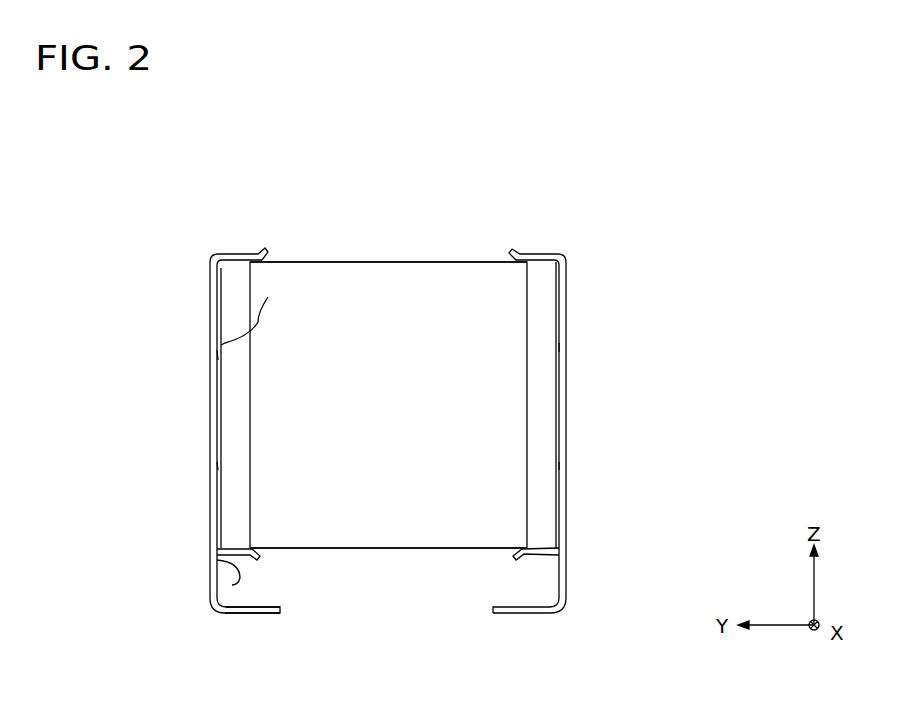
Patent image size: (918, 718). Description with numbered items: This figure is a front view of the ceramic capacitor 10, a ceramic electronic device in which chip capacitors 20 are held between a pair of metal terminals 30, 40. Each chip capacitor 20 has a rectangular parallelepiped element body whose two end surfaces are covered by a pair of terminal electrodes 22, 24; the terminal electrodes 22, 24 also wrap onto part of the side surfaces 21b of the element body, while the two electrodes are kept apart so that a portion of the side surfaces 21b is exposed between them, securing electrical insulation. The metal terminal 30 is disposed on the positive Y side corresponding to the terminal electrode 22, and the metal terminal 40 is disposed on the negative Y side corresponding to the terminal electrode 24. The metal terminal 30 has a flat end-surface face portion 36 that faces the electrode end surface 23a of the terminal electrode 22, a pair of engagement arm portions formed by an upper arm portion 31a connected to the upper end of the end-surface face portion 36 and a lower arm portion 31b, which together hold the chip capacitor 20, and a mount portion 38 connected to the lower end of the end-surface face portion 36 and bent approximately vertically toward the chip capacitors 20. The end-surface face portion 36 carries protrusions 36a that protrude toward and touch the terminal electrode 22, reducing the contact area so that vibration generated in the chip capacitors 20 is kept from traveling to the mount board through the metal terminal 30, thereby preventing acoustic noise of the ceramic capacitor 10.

The ceramic capacitor 10 is at (598, 226).
The chip capacitor 20 is at (381, 288).
The side surfaces 21b is at (429, 262).
The terminal electrode 22 is at (240, 300).
The electrode end surface 23a is at (217, 423).
The terminal electrode 24 is at (537, 310).
The metal terminal 30 is at (205, 608).
The upper arm portion 31a is at (238, 254).
The lower arm portion 31b is at (230, 583).
The end-surface face portion 36 is at (216, 357).
The protrusions 36a is at (268, 297).
The mount portion 38 is at (259, 615).
The metal terminal 40 is at (584, 372).